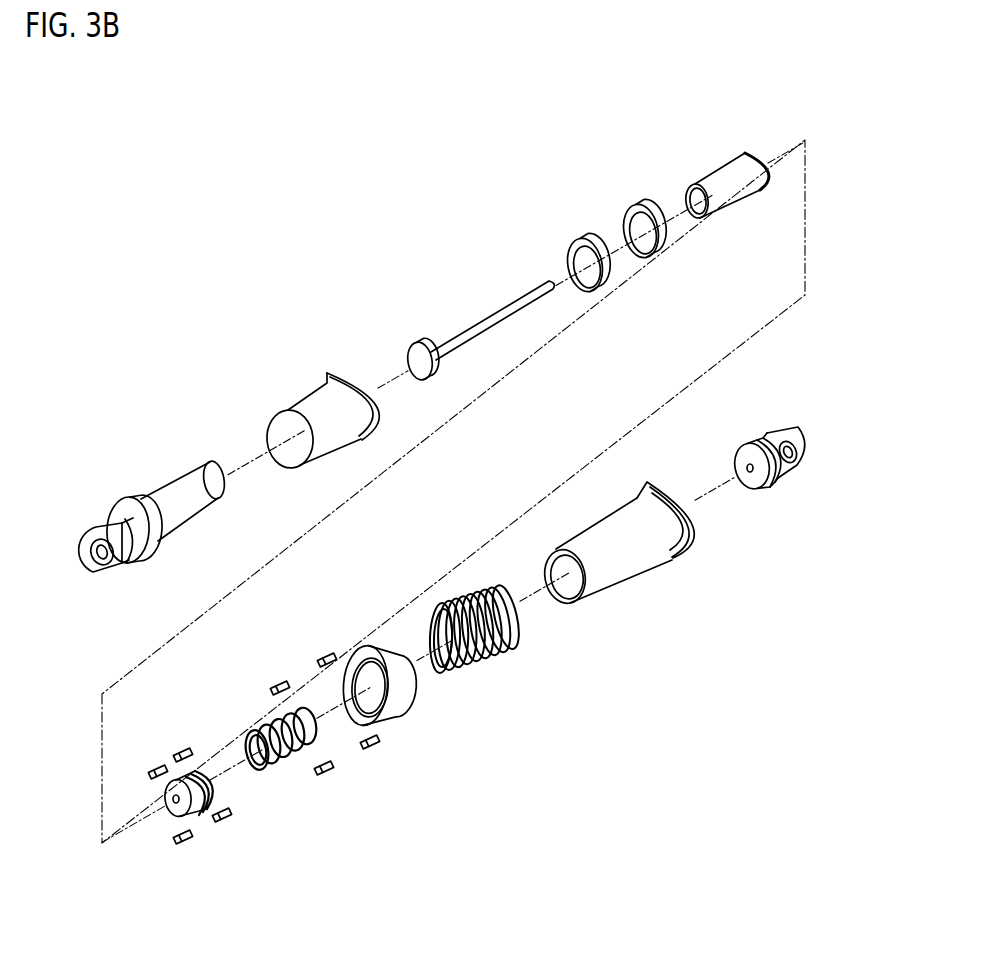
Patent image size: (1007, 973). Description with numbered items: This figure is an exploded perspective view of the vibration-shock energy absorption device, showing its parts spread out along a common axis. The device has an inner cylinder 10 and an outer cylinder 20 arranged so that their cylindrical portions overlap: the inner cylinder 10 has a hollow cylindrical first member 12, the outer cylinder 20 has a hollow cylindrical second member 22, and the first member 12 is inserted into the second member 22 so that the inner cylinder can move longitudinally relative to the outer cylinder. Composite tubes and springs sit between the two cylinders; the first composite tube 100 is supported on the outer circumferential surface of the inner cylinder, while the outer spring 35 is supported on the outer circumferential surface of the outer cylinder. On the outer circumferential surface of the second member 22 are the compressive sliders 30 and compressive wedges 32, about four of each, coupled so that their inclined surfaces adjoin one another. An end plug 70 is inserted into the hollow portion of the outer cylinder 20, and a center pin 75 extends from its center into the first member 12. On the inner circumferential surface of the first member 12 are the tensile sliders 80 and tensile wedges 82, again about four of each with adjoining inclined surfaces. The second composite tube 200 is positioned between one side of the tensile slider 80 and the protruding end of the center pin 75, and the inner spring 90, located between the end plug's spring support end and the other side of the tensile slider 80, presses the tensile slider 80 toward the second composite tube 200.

The inner cylinder 10 is at (100, 520).
The first member 12 is at (172, 490).
The first composite tube 100 is at (307, 405).
The center pin 75 is at (482, 325).
The second composite tube 200 is at (726, 178).
The end plug 70 is at (788, 430).
The outer cylinder 20 is at (677, 549).
The second member 22 is at (612, 563).
The compressive slider 30 is at (405, 693).
The compressive wedge 32 is at (335, 775).
The outer spring 35 is at (502, 653).
The inner spring 90 is at (280, 760).
The tensile slider 80 is at (177, 807).
The tensile wedge 82 is at (190, 838).